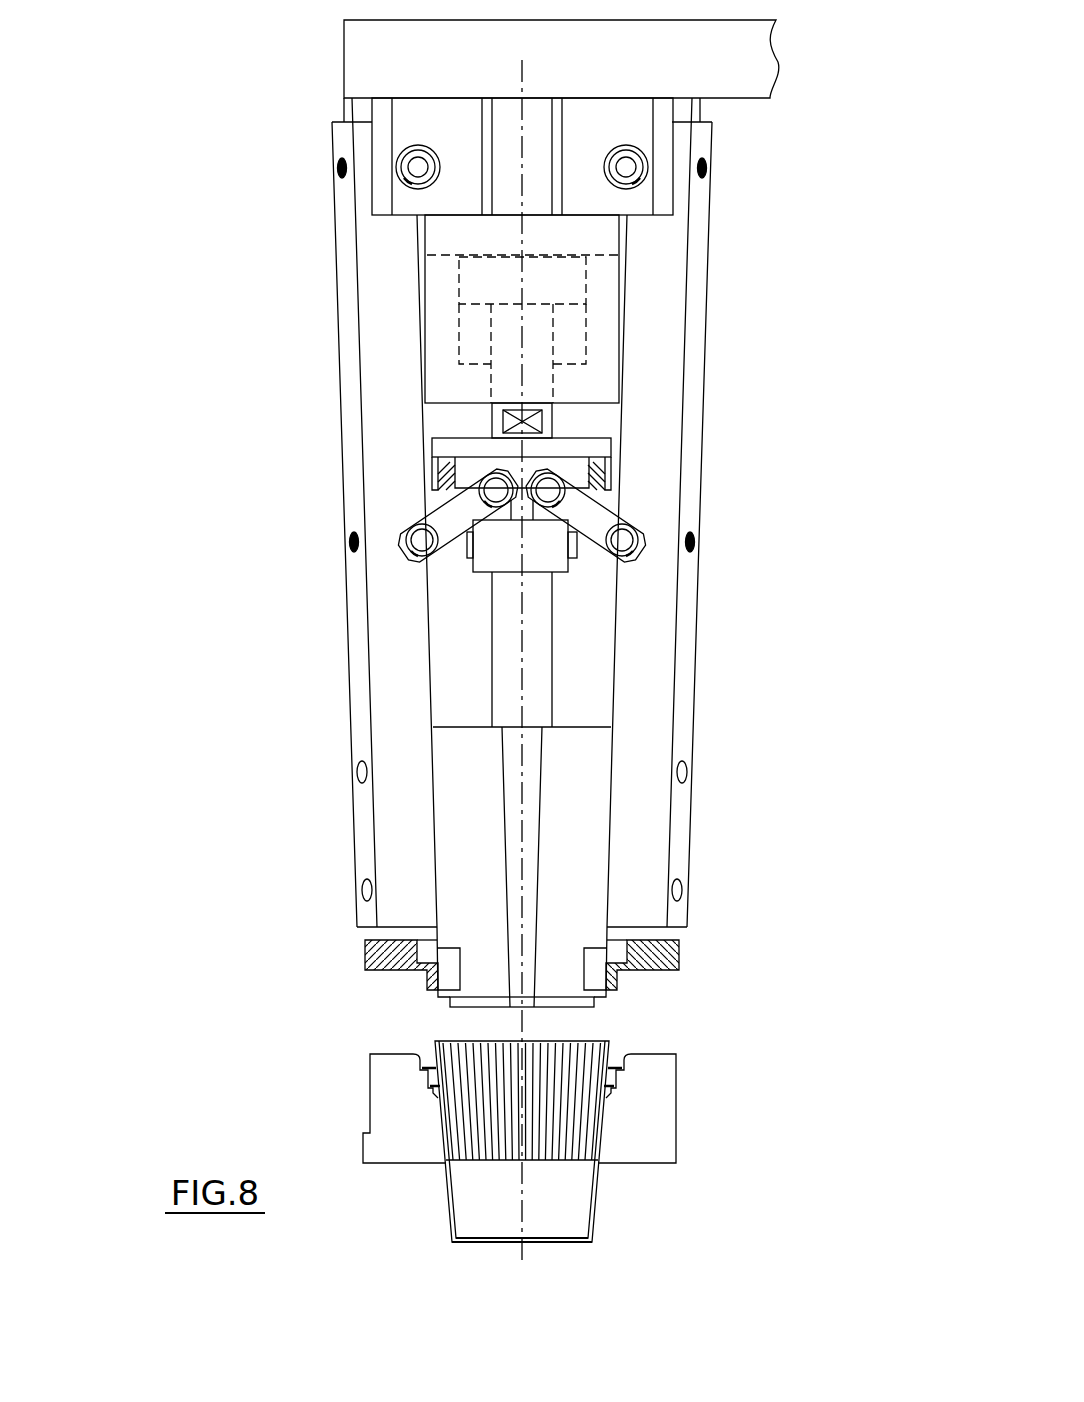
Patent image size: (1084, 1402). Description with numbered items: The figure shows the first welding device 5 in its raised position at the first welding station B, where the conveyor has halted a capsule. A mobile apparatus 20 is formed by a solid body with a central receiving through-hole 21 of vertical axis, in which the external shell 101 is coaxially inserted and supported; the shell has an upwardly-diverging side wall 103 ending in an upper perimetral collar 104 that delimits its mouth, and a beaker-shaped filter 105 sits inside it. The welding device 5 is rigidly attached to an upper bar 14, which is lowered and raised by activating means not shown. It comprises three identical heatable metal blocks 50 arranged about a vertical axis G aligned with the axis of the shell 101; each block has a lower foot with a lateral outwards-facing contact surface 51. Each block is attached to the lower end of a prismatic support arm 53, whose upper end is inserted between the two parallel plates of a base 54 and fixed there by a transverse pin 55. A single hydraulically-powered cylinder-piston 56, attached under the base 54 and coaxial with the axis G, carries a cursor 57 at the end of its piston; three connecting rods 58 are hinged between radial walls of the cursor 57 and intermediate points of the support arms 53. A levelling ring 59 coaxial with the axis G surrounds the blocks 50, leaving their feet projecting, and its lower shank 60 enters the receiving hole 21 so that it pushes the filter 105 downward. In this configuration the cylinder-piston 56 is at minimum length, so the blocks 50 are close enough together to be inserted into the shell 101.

The first welding device 5 is at (277, 217).
The upper bar 14 is at (743, 70).
The mobile apparatus 20 is at (375, 1105).
The receiving through-hole 21 is at (432, 1130).
The heatable metal blocks 50 is at (458, 835).
The lateral contact surface 51 is at (445, 995).
The support arm 53 is at (337, 360).
The base 54 is at (448, 117).
The transverse pin 55 is at (420, 170).
The hydraulically-powered cylinder-piston 56 is at (603, 280).
The cursor 57 is at (457, 452).
The connecting rod 58 is at (433, 513).
The levelling ring 59 is at (366, 957).
The lower shank 60 is at (620, 988).
The external shell 101 is at (607, 1137).
The side wall 103 is at (603, 1173).
The upper perimetral collar 104 is at (622, 1102).
The filter 105 is at (465, 1157).
The first welding station B is at (388, 1181).
The vertical axis G is at (520, 658).